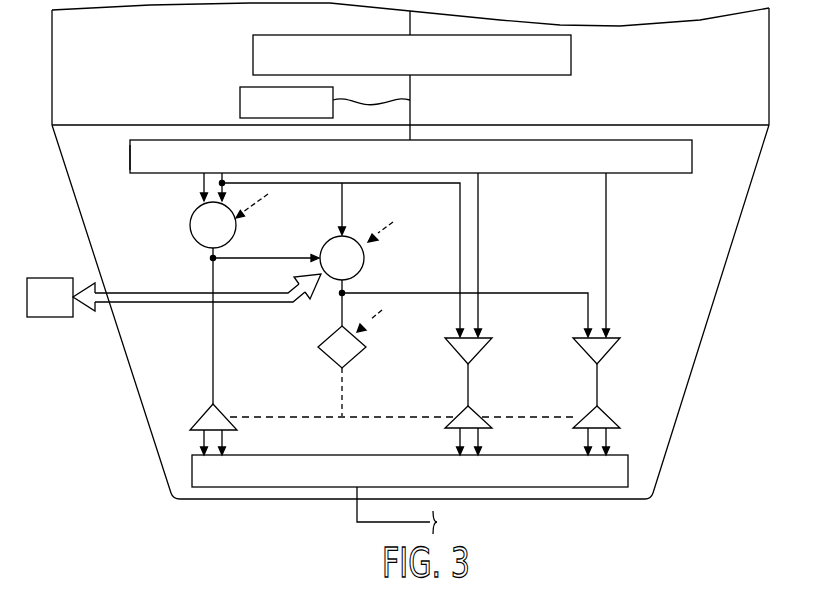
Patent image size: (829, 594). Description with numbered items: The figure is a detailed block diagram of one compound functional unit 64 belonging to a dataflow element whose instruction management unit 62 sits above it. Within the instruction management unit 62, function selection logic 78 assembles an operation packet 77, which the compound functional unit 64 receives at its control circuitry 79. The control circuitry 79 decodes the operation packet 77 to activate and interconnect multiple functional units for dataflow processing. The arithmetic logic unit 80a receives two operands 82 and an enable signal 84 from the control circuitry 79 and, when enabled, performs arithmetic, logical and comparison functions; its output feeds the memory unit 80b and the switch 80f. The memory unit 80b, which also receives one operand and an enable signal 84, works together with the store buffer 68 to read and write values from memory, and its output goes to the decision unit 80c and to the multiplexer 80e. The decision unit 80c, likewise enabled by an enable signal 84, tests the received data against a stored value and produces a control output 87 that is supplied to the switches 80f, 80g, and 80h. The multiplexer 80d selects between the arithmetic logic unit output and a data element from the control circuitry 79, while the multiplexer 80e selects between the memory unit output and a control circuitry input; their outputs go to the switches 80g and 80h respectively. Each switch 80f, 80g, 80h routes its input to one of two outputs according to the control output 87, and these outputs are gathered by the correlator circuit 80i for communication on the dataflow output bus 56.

The output bus 56 is at (356, 505).
The instruction management unit 62 is at (750, 60).
The compound functional unit 64 is at (741, 165).
The store buffer 68 is at (63, 308).
The operation packet 77 is at (299, 115).
The function selection logic 78 is at (422, 68).
The control circuitry 79 is at (129, 158).
The arithmetic logic unit 80a is at (190, 226).
The memory unit 80b is at (360, 272).
The decision unit 80c is at (326, 356).
The multiplexer 80d is at (456, 351).
The multiplexer 80e is at (584, 351).
The switch 80f is at (204, 417).
The switch 80g is at (460, 412).
The switch 80h is at (588, 412).
The correlator circuit 80i is at (628, 468).
The operands 82 is at (204, 180).
The enable signal 84 is at (262, 206).
The control output 87 is at (341, 392).